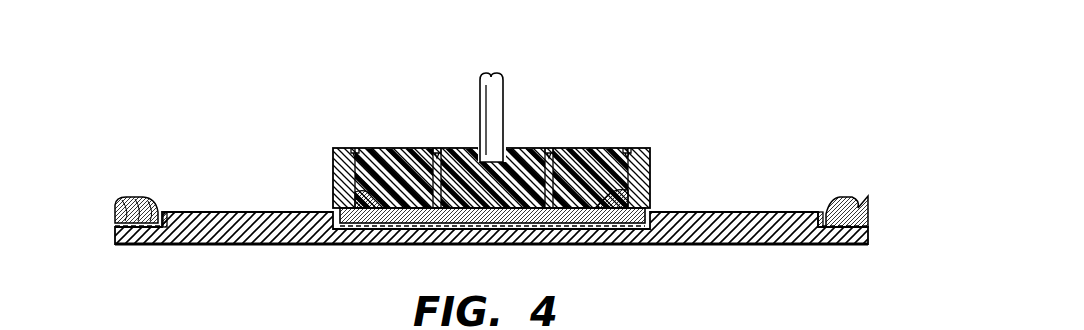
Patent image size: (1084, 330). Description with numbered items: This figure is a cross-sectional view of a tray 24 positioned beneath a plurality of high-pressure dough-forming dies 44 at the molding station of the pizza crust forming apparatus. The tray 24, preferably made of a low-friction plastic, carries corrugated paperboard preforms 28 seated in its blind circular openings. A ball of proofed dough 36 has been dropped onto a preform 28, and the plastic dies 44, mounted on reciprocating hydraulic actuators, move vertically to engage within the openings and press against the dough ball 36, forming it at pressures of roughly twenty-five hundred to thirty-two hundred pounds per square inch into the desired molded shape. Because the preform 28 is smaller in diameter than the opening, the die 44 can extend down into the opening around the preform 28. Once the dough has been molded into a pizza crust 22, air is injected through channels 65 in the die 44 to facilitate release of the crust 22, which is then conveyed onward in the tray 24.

The pizza crust 22 is at (826, 209).
The tray 24 is at (730, 213).
The corrugated paperboard preform 28 is at (118, 224).
The dough ball 36 is at (118, 196).
The plastic die 44 is at (650, 197).
The air channel 65 is at (439, 148).